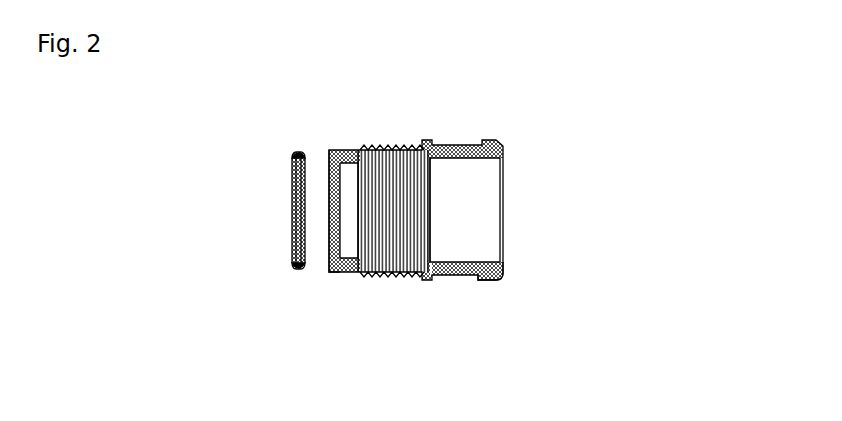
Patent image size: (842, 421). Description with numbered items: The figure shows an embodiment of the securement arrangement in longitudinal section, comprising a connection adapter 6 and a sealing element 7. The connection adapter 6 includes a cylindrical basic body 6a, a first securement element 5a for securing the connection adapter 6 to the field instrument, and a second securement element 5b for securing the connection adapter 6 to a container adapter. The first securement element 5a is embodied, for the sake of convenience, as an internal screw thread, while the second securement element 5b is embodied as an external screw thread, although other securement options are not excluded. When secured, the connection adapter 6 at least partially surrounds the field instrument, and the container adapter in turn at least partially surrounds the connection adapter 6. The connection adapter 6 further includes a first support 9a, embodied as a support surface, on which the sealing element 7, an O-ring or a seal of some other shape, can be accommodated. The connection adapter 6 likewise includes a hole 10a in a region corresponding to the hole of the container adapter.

The first securement element 5a is at (430, 163).
The second securement element 5b is at (386, 135).
The connection adapter 6 is at (650, 176).
The cylindrical basic body 6a is at (543, 288).
The sealing element 7 is at (282, 225).
The first support 9a is at (332, 275).
The hole 10a is at (352, 275).